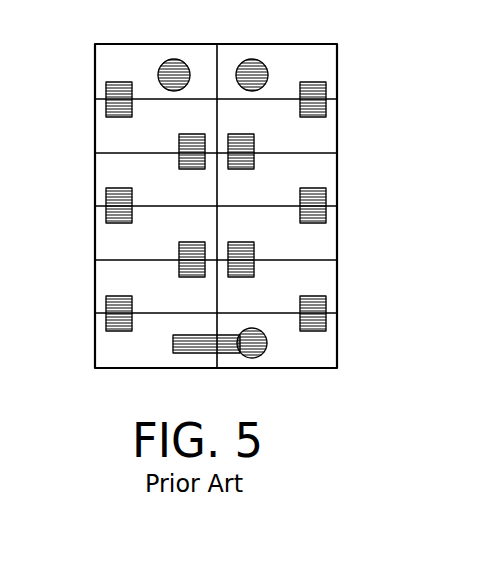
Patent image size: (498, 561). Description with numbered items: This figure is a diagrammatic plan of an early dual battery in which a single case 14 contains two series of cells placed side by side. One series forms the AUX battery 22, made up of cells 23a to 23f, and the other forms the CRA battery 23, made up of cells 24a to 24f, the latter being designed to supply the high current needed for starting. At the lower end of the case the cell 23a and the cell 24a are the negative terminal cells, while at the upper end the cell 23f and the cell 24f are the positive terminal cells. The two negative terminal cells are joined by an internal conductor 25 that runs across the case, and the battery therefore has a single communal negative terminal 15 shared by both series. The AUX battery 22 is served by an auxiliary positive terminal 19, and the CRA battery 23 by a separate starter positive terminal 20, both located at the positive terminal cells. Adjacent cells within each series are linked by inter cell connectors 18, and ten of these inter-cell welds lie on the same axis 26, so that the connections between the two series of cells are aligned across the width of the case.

The case 14 is at (337, 193).
The communal negative terminal 15 is at (250, 345).
The inter cell connectors 18 is at (315, 93).
The auxiliary positive terminal 19 is at (177, 75).
The starter positive terminal 20 is at (253, 73).
The AUX battery 22 is at (127, 44).
The CRA battery 23 is at (337, 349).
The negative terminal cell 23a is at (130, 350).
The positive terminal cell 23f is at (118, 64).
The negative terminal cell 24a is at (310, 352).
The positive terminal cell 24f is at (306, 60).
The internal conductor 25 is at (193, 345).
The axis 26 is at (318, 300).